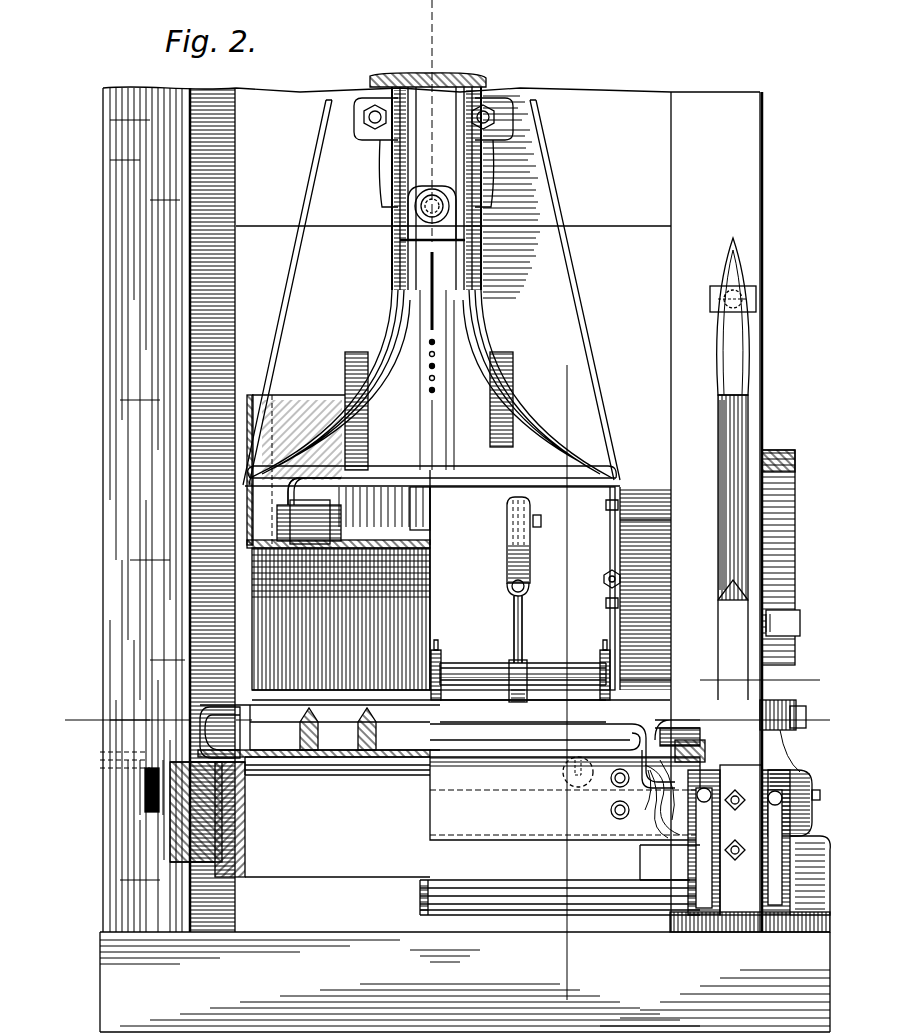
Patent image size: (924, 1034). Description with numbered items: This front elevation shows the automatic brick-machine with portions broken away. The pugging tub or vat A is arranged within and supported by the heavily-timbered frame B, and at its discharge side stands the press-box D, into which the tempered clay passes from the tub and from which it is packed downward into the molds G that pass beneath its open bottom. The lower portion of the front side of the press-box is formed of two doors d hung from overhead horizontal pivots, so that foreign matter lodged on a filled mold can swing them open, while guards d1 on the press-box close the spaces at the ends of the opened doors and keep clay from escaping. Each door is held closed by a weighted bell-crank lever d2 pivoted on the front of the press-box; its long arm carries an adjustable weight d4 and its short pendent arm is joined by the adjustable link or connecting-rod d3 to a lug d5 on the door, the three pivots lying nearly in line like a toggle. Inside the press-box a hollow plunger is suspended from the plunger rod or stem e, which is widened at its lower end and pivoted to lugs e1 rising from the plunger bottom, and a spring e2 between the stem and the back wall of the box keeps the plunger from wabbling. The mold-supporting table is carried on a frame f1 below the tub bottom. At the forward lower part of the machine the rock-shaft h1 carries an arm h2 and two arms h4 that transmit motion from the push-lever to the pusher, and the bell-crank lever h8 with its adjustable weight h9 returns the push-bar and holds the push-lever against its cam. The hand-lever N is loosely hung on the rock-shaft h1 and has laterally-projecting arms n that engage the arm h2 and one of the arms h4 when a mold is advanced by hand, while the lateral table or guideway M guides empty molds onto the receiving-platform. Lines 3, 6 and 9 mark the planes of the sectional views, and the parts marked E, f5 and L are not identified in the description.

The pugging tub or vat A is at (387, 500).
The heavily-timbered frame B is at (716, 512).
The hand-lever N is at (758, 352).
The casing box E is at (338, 471).
The plunger rod or stem e is at (432, 289).
The lugs e1 is at (290, 512).
The spring e2 is at (567, 370).
The press-box D is at (550, 682).
The doors d is at (520, 681).
The guards d1 is at (508, 712).
The weighted bell-crank lever d2 is at (524, 510).
The adjustable link or connecting-rod d3 is at (524, 628).
The adjustable weight d4 is at (535, 572).
The lug d5 is at (520, 712).
The molds G is at (319, 731).
The frame f1 is at (186, 862).
The rail f5 is at (337, 769).
The lateral table or guideway M is at (92, 772).
The bracket L is at (680, 728).
The rock-shaft h1 is at (412, 890).
The arm h2 is at (786, 894).
The arms h4 is at (700, 888).
The bell-crank lever h8 is at (796, 748).
The adjustable weight h9 is at (823, 784).
The laterally-projecting arms n is at (756, 838).
The section line 3- 3 is at (470, 14).
The section line 6- 6 is at (72, 662).
The section line 9- 9 is at (822, 708).